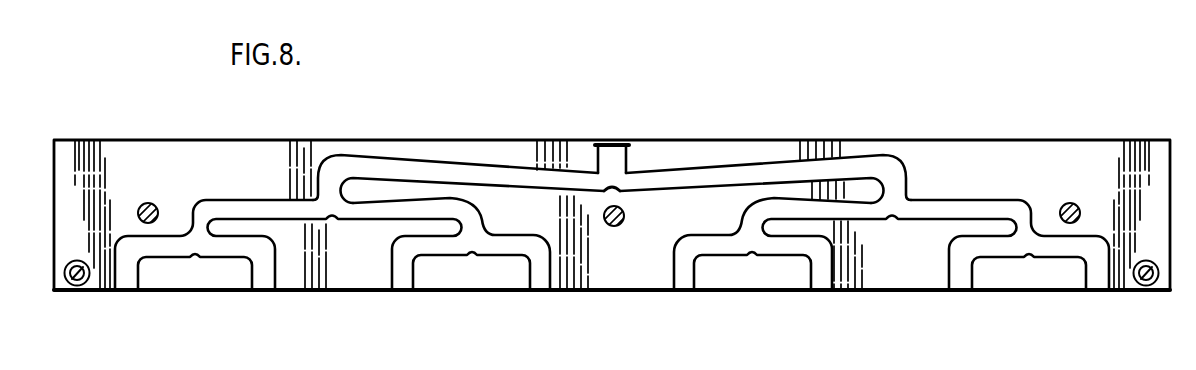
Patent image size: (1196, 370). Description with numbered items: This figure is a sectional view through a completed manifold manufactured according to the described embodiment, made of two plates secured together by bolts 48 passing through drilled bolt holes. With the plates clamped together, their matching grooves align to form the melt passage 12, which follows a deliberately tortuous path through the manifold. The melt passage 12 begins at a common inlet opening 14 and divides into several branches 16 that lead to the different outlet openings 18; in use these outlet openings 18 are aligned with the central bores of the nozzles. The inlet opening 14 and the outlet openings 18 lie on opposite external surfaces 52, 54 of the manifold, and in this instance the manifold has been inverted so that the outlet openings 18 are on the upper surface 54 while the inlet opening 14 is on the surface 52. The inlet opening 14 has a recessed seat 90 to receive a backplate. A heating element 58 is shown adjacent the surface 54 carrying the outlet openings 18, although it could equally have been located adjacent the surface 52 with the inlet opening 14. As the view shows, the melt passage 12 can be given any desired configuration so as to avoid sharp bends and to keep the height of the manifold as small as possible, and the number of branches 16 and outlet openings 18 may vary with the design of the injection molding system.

The melt passage 12 is at (737, 172).
The inlet opening 14 is at (610, 142).
The branches 16 is at (1068, 234).
The outlet openings 18 is at (265, 292).
The bolts 48 is at (148, 202).
The external surface 52 is at (903, 139).
The external surface 54 is at (888, 292).
The heating element 58 is at (1138, 290).
The recessed seat 90 is at (598, 142).